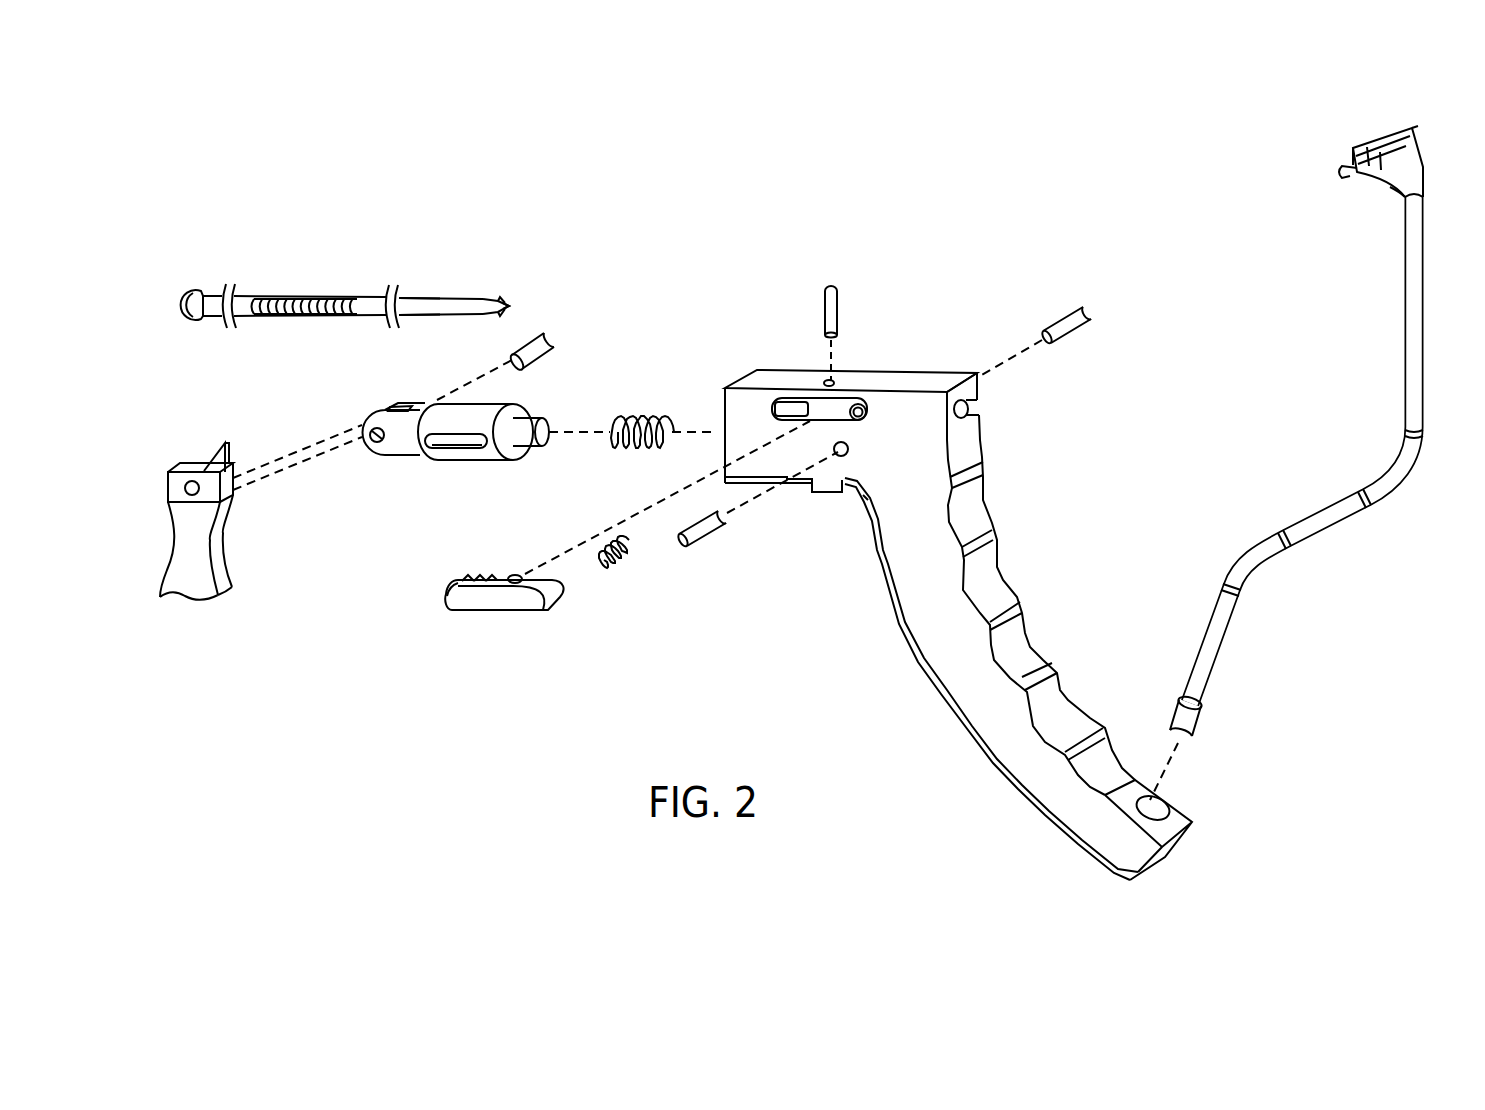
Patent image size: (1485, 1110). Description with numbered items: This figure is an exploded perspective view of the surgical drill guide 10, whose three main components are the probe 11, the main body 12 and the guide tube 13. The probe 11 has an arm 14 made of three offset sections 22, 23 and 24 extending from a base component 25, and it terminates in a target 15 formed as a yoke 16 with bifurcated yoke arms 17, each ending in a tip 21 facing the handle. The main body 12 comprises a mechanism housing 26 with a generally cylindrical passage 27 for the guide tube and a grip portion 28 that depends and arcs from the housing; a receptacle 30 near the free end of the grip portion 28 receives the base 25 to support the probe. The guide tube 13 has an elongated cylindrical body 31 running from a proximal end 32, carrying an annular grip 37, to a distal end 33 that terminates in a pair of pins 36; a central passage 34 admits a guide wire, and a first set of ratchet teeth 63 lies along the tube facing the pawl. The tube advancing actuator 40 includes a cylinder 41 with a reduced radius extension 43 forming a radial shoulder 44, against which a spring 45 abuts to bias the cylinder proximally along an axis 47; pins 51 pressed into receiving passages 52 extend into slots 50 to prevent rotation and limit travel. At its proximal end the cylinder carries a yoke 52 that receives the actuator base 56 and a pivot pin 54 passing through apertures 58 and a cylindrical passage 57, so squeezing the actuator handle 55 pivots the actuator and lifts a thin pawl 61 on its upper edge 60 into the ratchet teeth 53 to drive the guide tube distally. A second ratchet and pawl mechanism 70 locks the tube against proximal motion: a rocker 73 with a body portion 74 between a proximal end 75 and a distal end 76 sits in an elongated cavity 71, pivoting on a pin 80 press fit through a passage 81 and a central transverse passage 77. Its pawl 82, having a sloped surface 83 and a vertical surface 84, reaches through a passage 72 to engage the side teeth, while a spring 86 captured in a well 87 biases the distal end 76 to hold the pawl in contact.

The surgical drill guide 10 is at (932, 540).
The probe 11 is at (1325, 510).
The main body 12 is at (971, 583).
The guide tube 13 is at (378, 297).
The arm 14 is at (1338, 525).
The target 15 is at (1403, 212).
The yoke 16 is at (1368, 140).
The yoke arms 17 is at (1355, 143).
The tip 21 is at (1345, 172).
The offset section 22 is at (1305, 450).
The offset section 23 is at (1320, 542).
The offset section 24 is at (1408, 352).
The base component 25 is at (1186, 742).
The mechanism housing 26 is at (901, 478).
The passage 27 is at (975, 410).
The grip portion 28 is at (930, 537).
The receptacle 30 is at (1172, 802).
The cylindrical body 31 is at (562, 324).
The proximal end 32 is at (222, 292).
The distal end 33 is at (483, 300).
The central passage 34 is at (492, 303).
The pins 36 is at (505, 300).
The annular grip 37 is at (185, 295).
The actuator 40 is at (240, 533).
The cylinder 41 is at (606, 415).
The reduced radius extension 43 is at (545, 437).
The radial shoulder 44 is at (518, 452).
The spring 45 is at (630, 418).
The axis 47 is at (583, 431).
The slots 50 is at (470, 450).
The pins 51 is at (705, 530).
The yoke 52 is at (420, 406).
The ratchet teeth 53 is at (185, 568).
The pivot pin 54 is at (555, 346).
The actuator handle 55 is at (225, 580).
The base 56 is at (167, 487).
The cylindrical passage 57 is at (188, 497).
The apertures 58 is at (380, 442).
The upper edge 60 is at (183, 466).
The pawl 61 is at (222, 450).
The first set of ratchet teeth 63 is at (300, 300).
The second ratchet and pawl mechanism 70 is at (608, 538).
The elongated cavity 71 is at (850, 404).
The passage 72 is at (775, 402).
The rocker 73 is at (528, 604).
The body portion 74 is at (505, 598).
The proximal end 75 is at (457, 582).
The distal end 76 is at (558, 594).
The central transverse passage 77 is at (517, 574).
The pin 80 is at (838, 300).
The passage 81 is at (828, 380).
The pawl 82 is at (475, 578).
The sloped surface 83 is at (465, 578).
The vertical surface 84 is at (483, 576).
The spring 86 is at (613, 566).
The well 87 is at (866, 408).